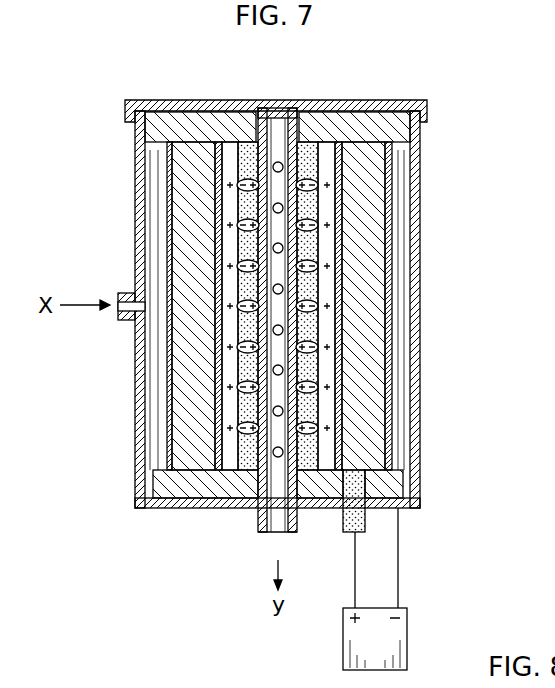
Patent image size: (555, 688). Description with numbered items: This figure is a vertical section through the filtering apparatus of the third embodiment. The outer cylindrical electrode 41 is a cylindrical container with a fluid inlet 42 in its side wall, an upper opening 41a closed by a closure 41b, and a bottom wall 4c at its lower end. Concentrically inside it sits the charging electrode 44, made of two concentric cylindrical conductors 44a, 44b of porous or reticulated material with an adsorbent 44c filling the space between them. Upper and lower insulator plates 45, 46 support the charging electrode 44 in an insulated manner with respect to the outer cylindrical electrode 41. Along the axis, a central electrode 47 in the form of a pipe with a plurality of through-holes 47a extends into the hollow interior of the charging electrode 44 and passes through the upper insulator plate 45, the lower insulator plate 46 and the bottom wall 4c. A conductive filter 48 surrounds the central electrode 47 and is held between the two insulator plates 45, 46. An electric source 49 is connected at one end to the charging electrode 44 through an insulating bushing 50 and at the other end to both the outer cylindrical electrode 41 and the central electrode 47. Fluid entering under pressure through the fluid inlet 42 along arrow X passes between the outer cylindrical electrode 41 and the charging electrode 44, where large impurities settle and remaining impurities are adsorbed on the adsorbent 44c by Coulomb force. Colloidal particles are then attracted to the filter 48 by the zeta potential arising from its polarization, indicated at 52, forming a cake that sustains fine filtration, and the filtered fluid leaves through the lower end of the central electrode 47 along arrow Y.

The outer cylindrical electrode 41 is at (418, 221).
The upper opening 41a is at (400, 108).
The closure 41b is at (265, 109).
The fluid inlet 42 is at (120, 298).
The charging electrode 44 is at (347, 306).
The cylindrical conductor 44a is at (340, 316).
The cylindrical conductor 44b is at (392, 320).
The adsorbent 44c is at (372, 366).
The upper insulator plate 45 is at (214, 118).
The lower insulator plate 46 is at (418, 480).
The central electrode 47 is at (250, 440).
The through-holes 47a is at (222, 243).
The filter 48 is at (398, 168).
The electric source 49 is at (407, 628).
The insulating bushing 50 is at (352, 532).
The polarization of the filter 52 is at (246, 427).
The bottom wall 4c is at (166, 508).